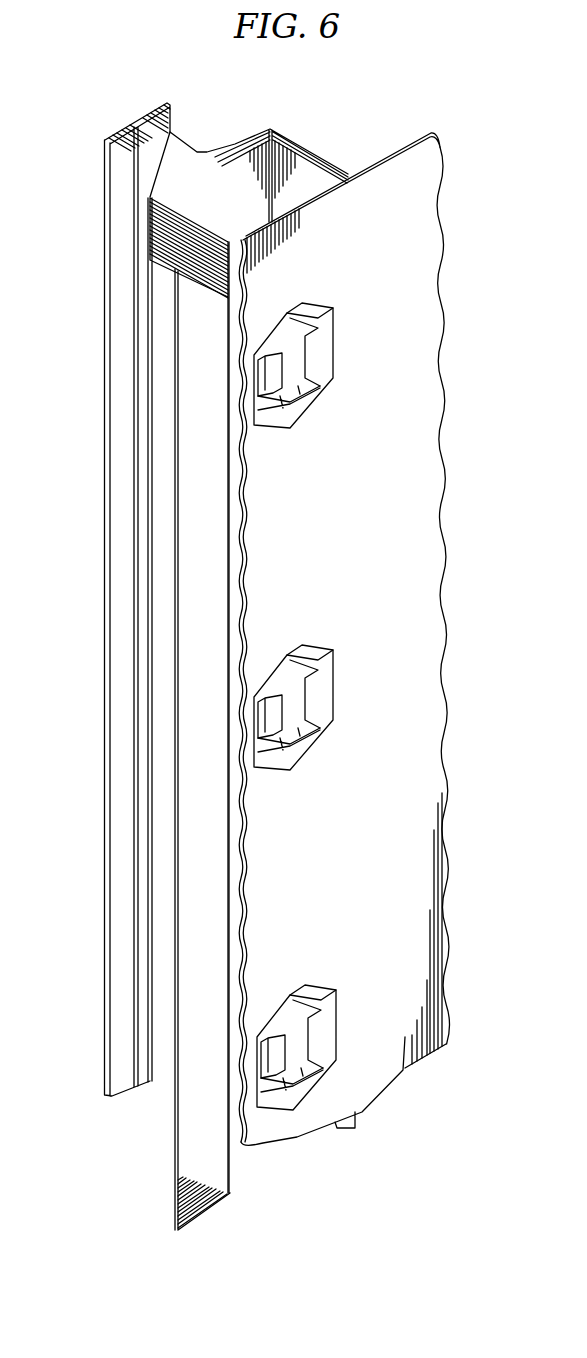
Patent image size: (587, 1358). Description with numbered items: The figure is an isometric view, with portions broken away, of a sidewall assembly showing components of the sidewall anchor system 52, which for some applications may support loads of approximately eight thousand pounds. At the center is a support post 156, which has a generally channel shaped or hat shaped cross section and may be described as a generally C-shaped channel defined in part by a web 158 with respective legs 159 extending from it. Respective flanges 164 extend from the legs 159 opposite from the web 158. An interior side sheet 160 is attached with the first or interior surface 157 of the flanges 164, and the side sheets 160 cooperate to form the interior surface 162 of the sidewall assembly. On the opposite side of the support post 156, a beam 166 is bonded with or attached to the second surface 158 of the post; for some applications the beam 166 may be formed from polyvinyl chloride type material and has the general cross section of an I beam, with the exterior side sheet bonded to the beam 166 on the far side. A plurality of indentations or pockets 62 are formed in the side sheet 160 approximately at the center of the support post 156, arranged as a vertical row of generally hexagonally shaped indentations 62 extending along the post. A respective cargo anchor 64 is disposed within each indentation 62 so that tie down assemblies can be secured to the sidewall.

The sidewall anchor system 52 is at (296, 1115).
The indentation 62 is at (327, 342).
The cargo anchor 64 is at (300, 392).
The support post 156 is at (282, 128).
The first surface 157 is at (218, 578).
The web 158 is at (247, 180).
The leg 159 is at (308, 178).
The interior side sheet 160 is at (309, 648).
The interior surface 162 is at (373, 511).
The flange 164 is at (382, 152).
The beam 166 is at (118, 345).